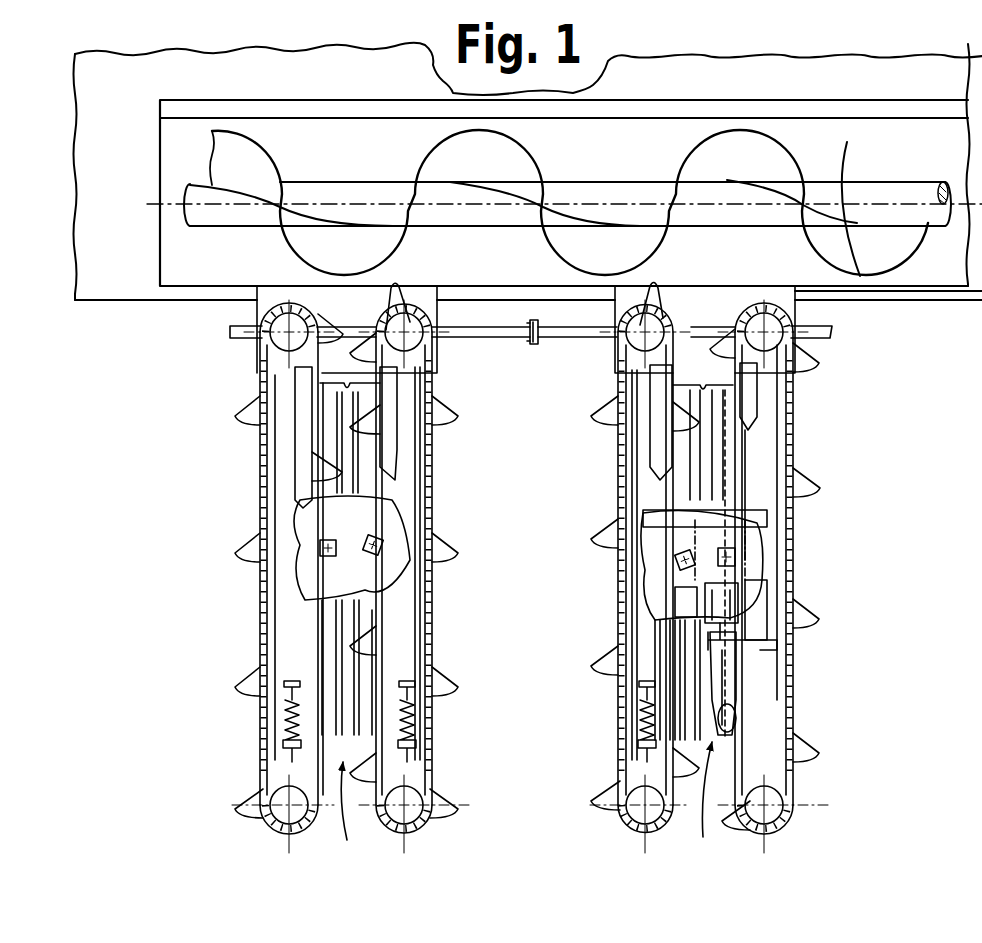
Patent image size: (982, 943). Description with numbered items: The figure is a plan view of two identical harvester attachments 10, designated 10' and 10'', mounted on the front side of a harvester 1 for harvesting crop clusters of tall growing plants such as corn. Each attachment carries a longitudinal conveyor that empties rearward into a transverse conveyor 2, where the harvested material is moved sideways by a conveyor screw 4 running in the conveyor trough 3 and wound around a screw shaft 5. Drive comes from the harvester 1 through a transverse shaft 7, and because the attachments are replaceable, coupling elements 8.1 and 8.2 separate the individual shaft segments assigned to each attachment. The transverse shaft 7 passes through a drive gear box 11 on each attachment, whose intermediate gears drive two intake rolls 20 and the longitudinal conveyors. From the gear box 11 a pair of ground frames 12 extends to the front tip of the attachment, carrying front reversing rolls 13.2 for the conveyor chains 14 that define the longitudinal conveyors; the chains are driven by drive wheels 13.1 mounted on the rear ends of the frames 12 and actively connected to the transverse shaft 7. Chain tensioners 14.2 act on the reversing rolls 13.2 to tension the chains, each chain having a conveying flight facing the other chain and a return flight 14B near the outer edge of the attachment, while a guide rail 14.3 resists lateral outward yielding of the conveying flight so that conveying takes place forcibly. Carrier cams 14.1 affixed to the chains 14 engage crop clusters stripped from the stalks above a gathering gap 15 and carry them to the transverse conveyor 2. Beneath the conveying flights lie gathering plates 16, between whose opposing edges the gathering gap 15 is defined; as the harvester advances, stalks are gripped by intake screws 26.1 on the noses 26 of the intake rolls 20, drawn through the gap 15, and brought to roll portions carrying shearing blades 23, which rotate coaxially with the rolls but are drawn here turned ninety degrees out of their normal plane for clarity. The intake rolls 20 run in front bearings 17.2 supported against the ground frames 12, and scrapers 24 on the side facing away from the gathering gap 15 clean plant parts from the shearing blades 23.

The harvester 1 is at (377, 84).
The transverse conveyor 2 is at (158, 150).
The conveyor trough 3 is at (628, 157).
The conveyor screw 4 is at (428, 153).
The screw shaft 5 is at (237, 220).
The transverse shaft 7 is at (232, 331).
The coupling element 8.1 is at (530, 318).
The coupling element 8.2 is at (537, 340).
The harvester attachment 10 is at (536, 537).
The first harvester attachment 10' is at (232, 463).
The second harvester attachment 10'' is at (858, 584).
The drive gear box 11 is at (358, 318).
The ground frame 12 is at (642, 433).
The drive wheel 13.1 is at (377, 348).
The front reversing roll 13.2 is at (283, 820).
The conveyor chain 14 is at (258, 500).
The carrier cam 14.1 is at (235, 553).
The chain tensioner 14.2 is at (403, 743).
The guide rail 14.3 is at (237, 417).
The return flight 14B is at (823, 482).
The gathering gap 15 is at (522, 809).
The gathering plate 16 is at (363, 450).
The front bearing 17.2 is at (777, 647).
The intake roll 20 is at (767, 520).
The shearing blade 23 is at (330, 543).
The scraper 24 is at (645, 567).
The nose 26 is at (737, 698).
The intake screw 26.1 is at (743, 727).